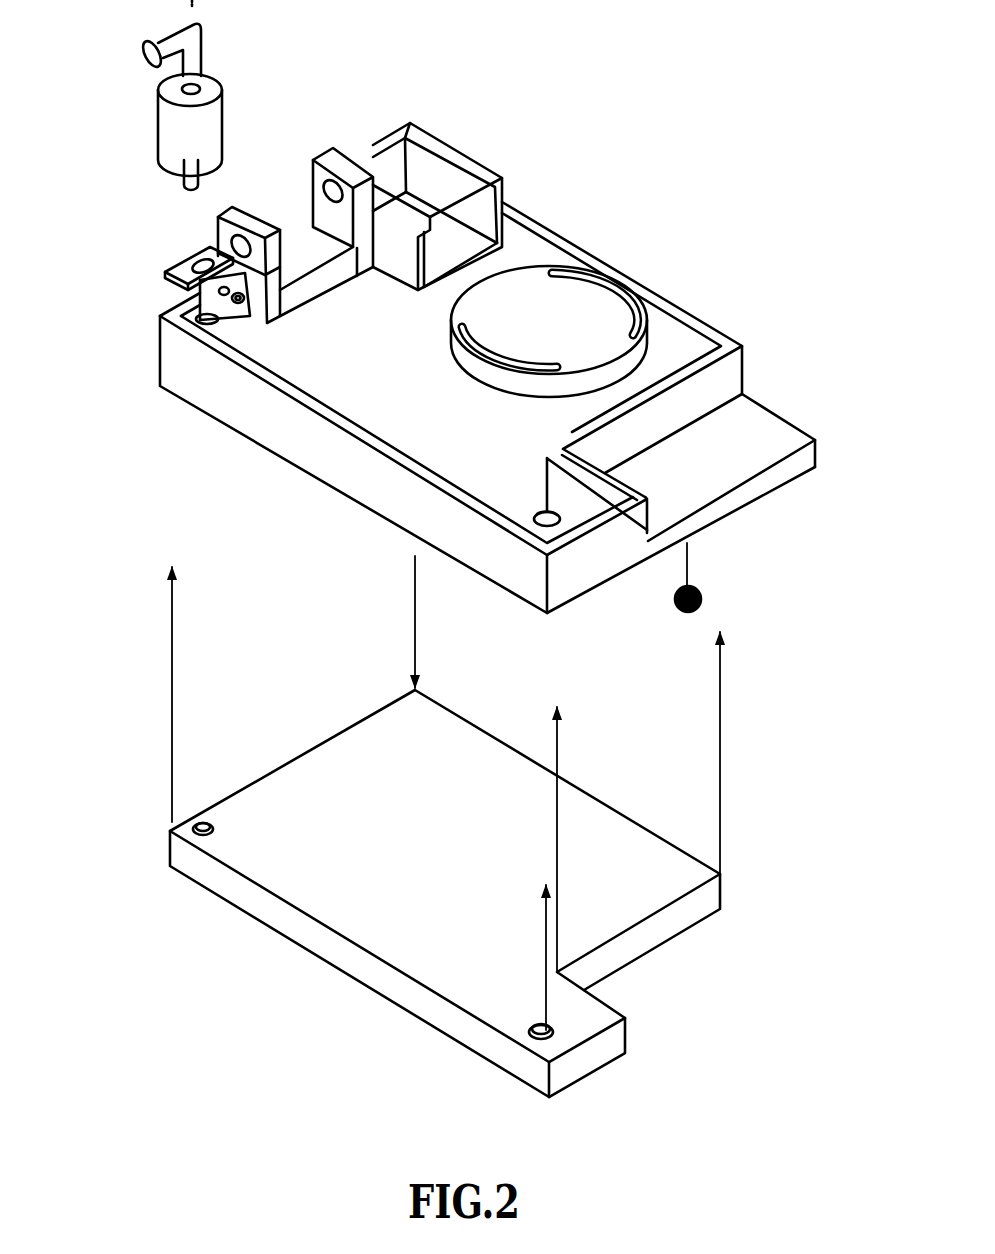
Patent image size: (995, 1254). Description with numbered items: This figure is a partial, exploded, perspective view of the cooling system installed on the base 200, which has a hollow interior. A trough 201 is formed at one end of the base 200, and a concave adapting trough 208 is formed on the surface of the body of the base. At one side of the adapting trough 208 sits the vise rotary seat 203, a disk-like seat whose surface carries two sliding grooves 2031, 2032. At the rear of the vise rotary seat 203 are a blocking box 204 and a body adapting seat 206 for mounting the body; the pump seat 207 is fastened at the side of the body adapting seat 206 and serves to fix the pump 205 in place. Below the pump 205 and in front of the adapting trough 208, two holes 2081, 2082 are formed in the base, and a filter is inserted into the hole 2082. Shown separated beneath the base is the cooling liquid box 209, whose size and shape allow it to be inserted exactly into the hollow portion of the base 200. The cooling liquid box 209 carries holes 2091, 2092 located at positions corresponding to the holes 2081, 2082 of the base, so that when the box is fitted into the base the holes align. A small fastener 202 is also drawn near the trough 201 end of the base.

The base 200 is at (740, 372).
The trough 201 is at (748, 453).
The screw 202 is at (704, 593).
The vise rotary seat 203 is at (586, 344).
The sliding groove 2031 is at (604, 280).
The sliding groove 2032 is at (503, 376).
The blocking box 204 is at (470, 166).
The pump 205 is at (207, 127).
The body adapting seat 206 is at (300, 246).
The pump seat 207 is at (181, 262).
The adapting trough 208 is at (408, 432).
The hole 2081 is at (219, 320).
The hole 2082 is at (536, 512).
The cooling liquid box 209 is at (634, 943).
The hole 2091 is at (206, 821).
The hole 2092 is at (527, 1044).